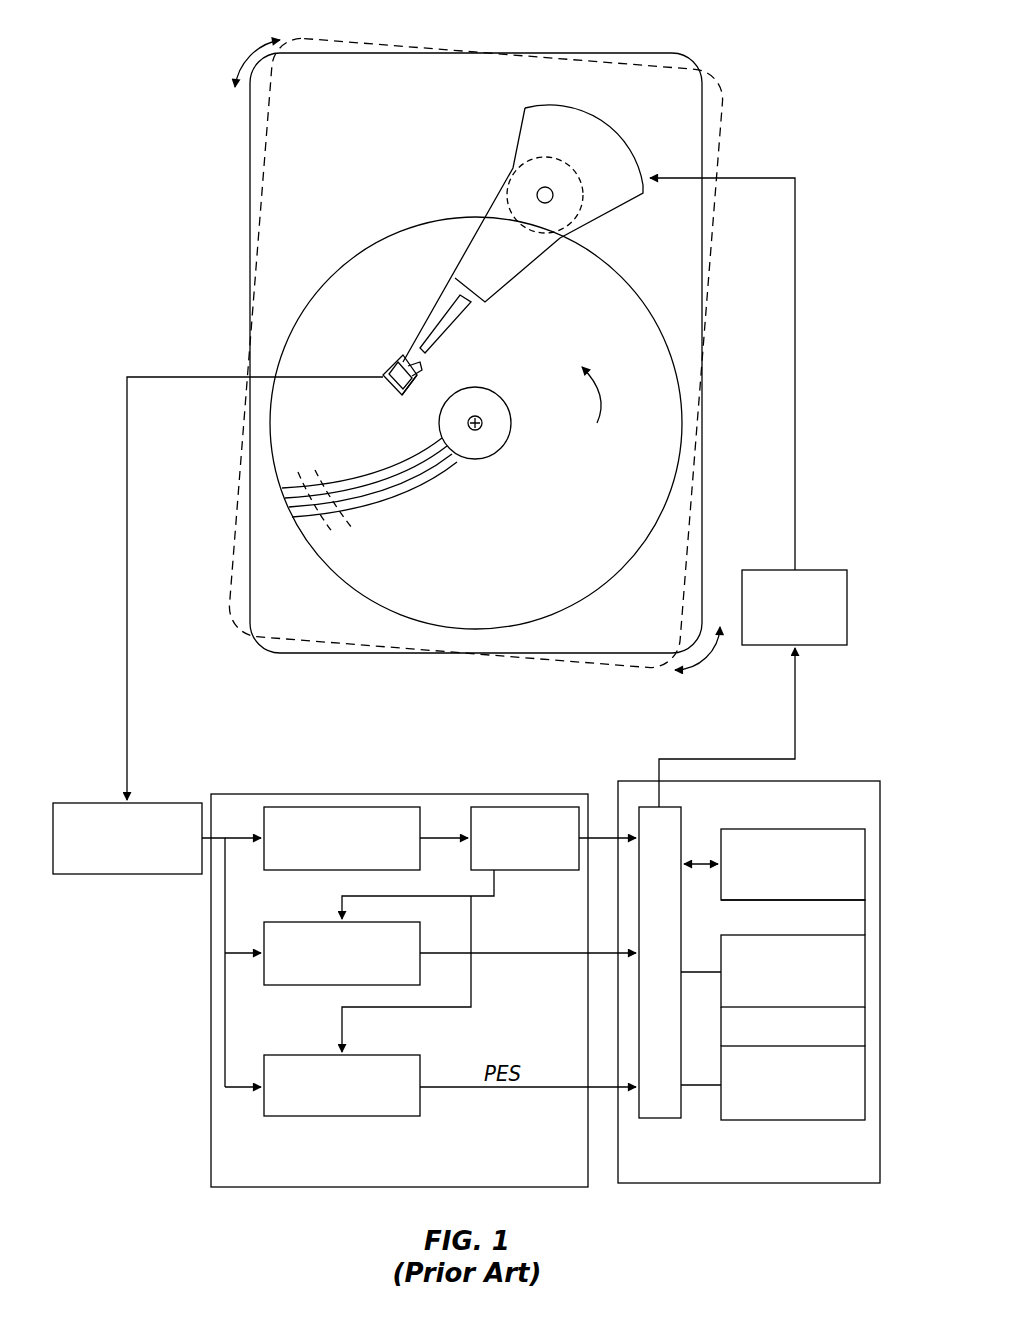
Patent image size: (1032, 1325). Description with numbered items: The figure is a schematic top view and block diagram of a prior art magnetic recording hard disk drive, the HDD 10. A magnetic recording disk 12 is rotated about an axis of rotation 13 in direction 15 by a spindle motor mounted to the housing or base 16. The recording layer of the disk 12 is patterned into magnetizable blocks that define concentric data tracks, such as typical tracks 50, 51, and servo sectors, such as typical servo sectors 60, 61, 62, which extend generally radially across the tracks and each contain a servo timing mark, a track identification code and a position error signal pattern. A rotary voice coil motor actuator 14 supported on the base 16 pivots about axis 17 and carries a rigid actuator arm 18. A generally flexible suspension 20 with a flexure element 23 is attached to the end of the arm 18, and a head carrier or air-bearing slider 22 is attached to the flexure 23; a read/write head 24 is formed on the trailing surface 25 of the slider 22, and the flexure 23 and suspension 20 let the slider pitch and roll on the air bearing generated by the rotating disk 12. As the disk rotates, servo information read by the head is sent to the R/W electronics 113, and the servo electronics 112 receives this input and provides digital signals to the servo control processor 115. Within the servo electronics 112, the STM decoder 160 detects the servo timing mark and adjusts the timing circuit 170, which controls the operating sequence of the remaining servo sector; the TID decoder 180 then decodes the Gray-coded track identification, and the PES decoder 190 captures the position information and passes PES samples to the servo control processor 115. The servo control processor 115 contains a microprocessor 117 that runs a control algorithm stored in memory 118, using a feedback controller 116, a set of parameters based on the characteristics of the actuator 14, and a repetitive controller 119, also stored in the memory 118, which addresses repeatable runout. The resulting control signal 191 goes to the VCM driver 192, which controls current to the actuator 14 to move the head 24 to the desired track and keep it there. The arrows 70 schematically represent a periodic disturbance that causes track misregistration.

The magnetic recording HDD 10 is at (170, 26).
The magnetic recording disk 12 is at (478, 591).
The axis of rotation 13 is at (483, 425).
The rotary voice coil motor (VCM) actuator 14 is at (603, 122).
The direction of disk rotation 15 is at (598, 405).
The housing or base 16 is at (632, 53).
The pivot axis 17 is at (537, 196).
The rigid actuator arm 18 is at (472, 264).
The suspension 20 is at (438, 312).
The head carrier or air-bearing slider 22 is at (397, 363).
The flexure element 23 is at (414, 372).
The read/write head 24 is at (414, 386).
The trailing surface 25 is at (384, 394).
The data track 50 is at (348, 528).
The data track 51 is at (337, 537).
The servo sector 60 is at (431, 484).
The servo sector 61 is at (422, 460).
The servo sector 62 is at (373, 476).
The periodic disturbance arrows 70 is at (254, 50).
The servo electronics 112 is at (211, 957).
The R/W electronics 113 is at (118, 802).
The servo control processor 115 is at (820, 781).
The feedback controller 116 is at (795, 935).
The microprocessor 117 is at (682, 826).
The memory 118 is at (795, 829).
The repetitive controller 119 is at (795, 1046).
The STM decoder 160 is at (293, 872).
The timing circuit 170 is at (527, 872).
The TID decoder 180 is at (293, 986).
The PES decoder 190 is at (293, 1117).
The control signal 191 is at (681, 758).
The VCM driver 192 is at (826, 570).